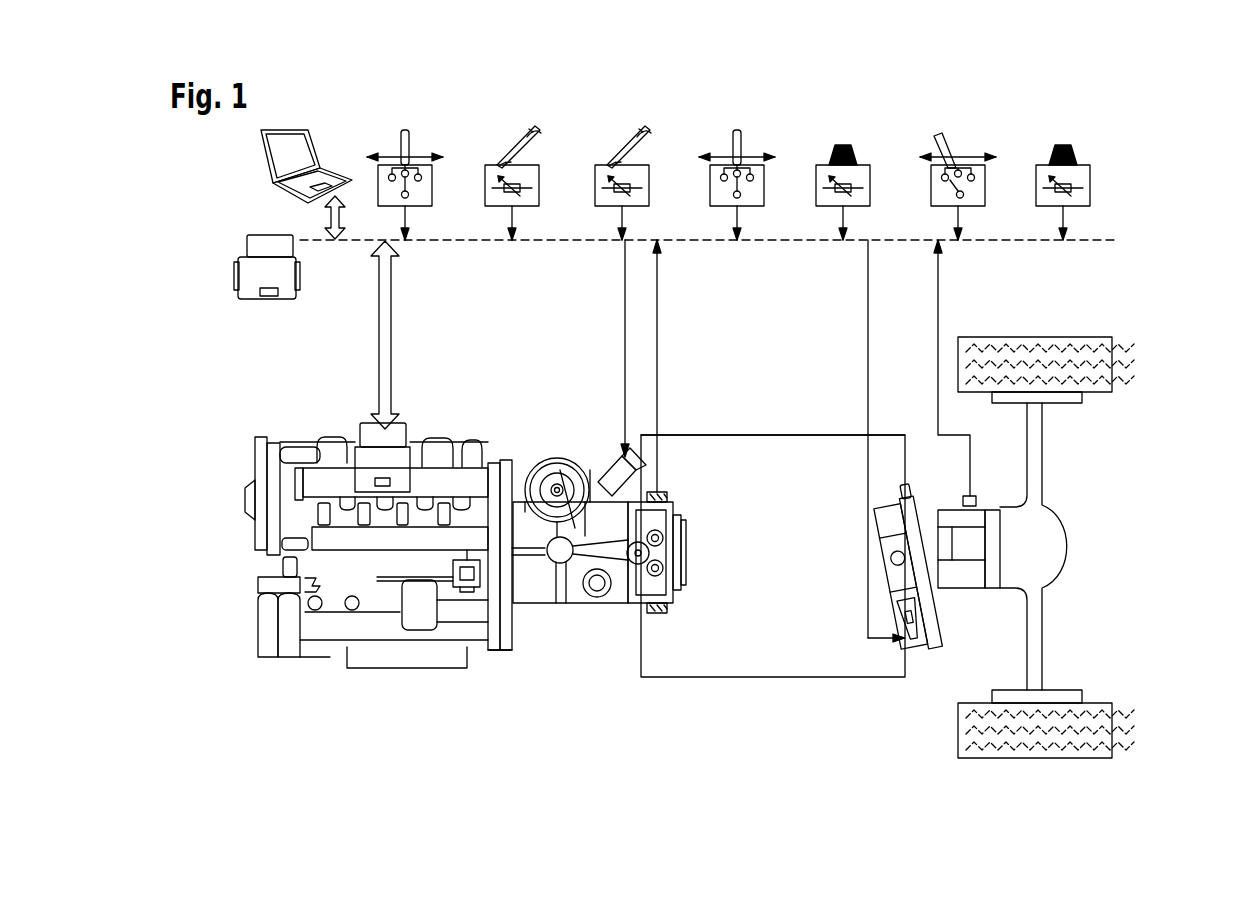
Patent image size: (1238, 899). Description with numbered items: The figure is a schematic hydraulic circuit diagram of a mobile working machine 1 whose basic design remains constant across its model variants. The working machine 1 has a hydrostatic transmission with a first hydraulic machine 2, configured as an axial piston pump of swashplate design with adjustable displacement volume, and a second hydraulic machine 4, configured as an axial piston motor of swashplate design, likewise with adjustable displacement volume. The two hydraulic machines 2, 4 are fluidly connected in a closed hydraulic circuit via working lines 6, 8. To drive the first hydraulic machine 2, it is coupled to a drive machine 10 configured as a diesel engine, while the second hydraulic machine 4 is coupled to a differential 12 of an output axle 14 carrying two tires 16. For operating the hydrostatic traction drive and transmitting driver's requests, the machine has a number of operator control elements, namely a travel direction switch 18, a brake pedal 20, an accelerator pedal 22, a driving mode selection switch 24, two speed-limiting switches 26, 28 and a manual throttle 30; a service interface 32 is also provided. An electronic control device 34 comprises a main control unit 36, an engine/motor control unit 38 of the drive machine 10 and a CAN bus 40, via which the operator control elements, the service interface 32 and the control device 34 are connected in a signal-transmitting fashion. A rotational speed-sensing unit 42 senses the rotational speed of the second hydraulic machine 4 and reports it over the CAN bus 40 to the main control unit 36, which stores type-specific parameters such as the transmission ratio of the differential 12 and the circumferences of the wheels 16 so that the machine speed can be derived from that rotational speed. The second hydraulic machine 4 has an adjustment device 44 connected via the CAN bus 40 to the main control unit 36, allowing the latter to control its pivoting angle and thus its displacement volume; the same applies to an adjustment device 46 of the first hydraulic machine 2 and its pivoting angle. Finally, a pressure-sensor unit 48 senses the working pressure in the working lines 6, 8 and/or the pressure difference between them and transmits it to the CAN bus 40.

The mobile working machine 1 is at (1160, 156).
The first hydraulic machine 2 is at (575, 612).
The second hydraulic machine 4 is at (884, 552).
The working line 6 is at (752, 678).
The working line 8 is at (787, 434).
The drive machine 10 is at (355, 651).
The differential 12 is at (1053, 548).
The output axle 14 is at (1132, 426).
The tires 16 is at (1100, 356).
The travel direction switch 18 is at (409, 133).
The brake pedal 20 is at (528, 136).
The accelerator pedal 22 is at (638, 136).
The driving mode selection switch 24 is at (741, 133).
The speed-limiting switch 26 is at (848, 146).
The speed-limiting switch 28 is at (950, 133).
The manual throttle 30 is at (1068, 146).
The service interface 32 is at (305, 131).
The electronic control device 34 is at (228, 385).
The main control unit 36 is at (251, 294).
The engine/motor control unit 38 is at (370, 455).
The CAN bus 40 is at (438, 245).
The rotational speed-sensing unit 42 is at (985, 478).
The adjustment device 44 is at (920, 685).
The adjustment device 46 is at (598, 430).
The pressure-sensor unit 48 is at (685, 495).